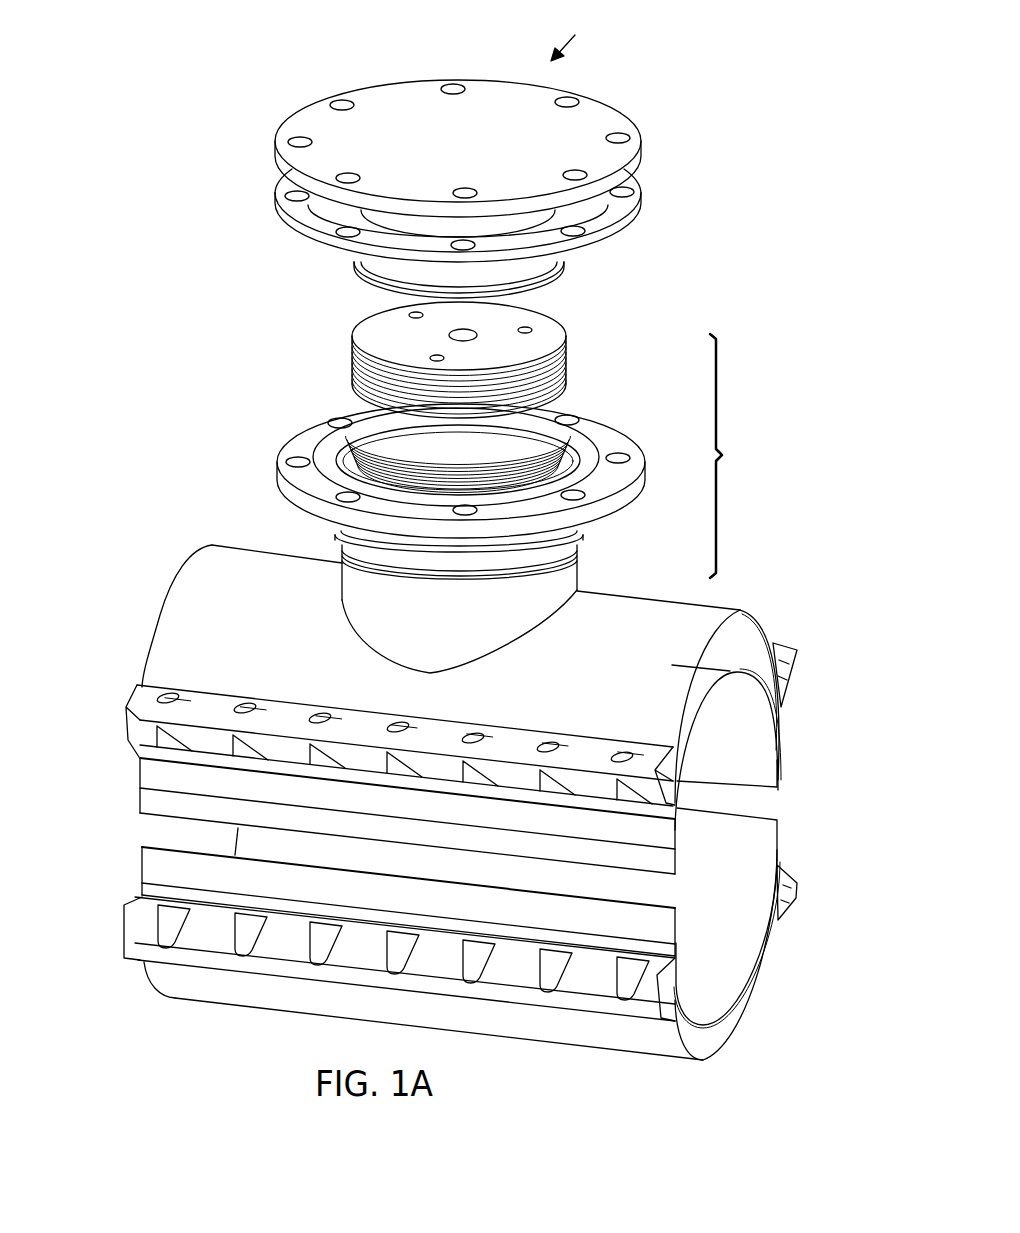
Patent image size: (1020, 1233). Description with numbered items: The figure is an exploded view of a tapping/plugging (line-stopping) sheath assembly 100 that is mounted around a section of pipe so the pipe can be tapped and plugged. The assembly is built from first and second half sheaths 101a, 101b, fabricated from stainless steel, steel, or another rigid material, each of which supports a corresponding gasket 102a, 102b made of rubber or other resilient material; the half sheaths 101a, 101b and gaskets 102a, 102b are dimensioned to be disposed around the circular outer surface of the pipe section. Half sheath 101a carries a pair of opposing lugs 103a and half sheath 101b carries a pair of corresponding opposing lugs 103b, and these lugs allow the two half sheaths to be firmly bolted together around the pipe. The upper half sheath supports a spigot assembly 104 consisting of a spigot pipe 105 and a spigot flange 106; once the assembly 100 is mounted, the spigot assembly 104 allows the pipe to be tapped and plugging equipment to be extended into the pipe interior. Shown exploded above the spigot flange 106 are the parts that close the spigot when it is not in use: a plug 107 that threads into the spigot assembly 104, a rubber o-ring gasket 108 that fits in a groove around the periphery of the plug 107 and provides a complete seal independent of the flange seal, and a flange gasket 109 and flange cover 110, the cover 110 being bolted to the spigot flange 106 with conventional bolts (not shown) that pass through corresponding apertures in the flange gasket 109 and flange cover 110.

The tapping/plugging sheath assembly 100 is at (575, 33).
The first half sheath 101a is at (635, 598).
The second half sheath 101b is at (615, 1050).
The gasket 102a is at (778, 775).
The gasket 102b is at (778, 852).
The opposing lugs 103a is at (137, 690).
The opposing lugs 103b is at (122, 920).
The spigot assembly 104 is at (736, 456).
The spigot pipe 105 is at (342, 582).
The spigot flange 106 is at (280, 470).
The plug 107 is at (568, 365).
The rubber o-ring gasket 108 is at (562, 275).
The flange gasket 109 is at (640, 200).
The flange cover 110 is at (640, 148).